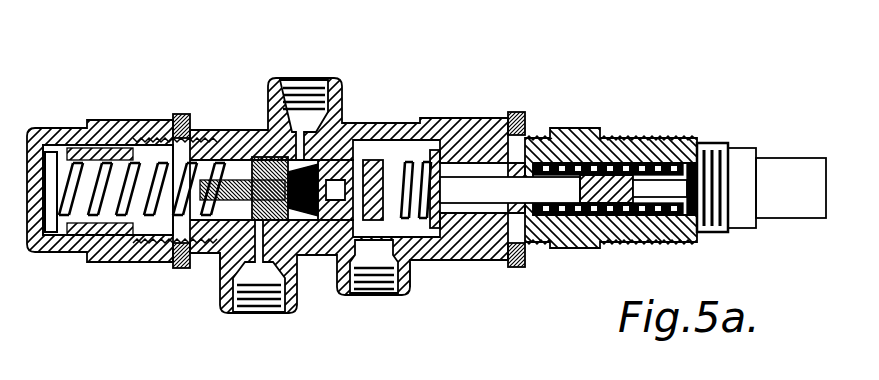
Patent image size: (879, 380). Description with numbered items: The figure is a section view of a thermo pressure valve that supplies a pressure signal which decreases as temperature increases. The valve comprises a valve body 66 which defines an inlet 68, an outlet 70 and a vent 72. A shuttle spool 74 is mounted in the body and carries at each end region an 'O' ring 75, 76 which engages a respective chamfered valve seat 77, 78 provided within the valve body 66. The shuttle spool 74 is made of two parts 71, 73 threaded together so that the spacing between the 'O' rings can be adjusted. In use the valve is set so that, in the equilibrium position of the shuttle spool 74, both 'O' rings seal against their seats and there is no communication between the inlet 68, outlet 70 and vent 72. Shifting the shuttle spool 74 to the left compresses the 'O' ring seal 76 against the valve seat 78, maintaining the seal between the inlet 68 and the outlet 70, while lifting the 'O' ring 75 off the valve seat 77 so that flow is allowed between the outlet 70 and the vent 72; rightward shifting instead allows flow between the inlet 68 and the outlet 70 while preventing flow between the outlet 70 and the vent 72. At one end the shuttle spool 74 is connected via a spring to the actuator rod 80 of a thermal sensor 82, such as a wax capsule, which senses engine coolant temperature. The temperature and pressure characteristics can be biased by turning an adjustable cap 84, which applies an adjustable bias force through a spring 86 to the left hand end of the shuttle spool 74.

The valve body 66 is at (466, 268).
The inlet 68 is at (362, 294).
The outlet 70 is at (292, 82).
The first part of shuttle spool 71 is at (213, 253).
The vent 72 is at (273, 313).
The second part of shuttle spool 73 is at (407, 275).
The shuttle spool 74 is at (342, 127).
The 'O' ring 75 is at (268, 158).
The 'O' ring seal 76 is at (380, 140).
The chamfered valve seat 77 is at (221, 259).
The chamfered valve seat 78 is at (317, 272).
The actuator rod 80 is at (617, 178).
The thermal sensor 82 is at (777, 197).
The adjustable cap 84 is at (55, 127).
The bias spring 86 is at (120, 160).